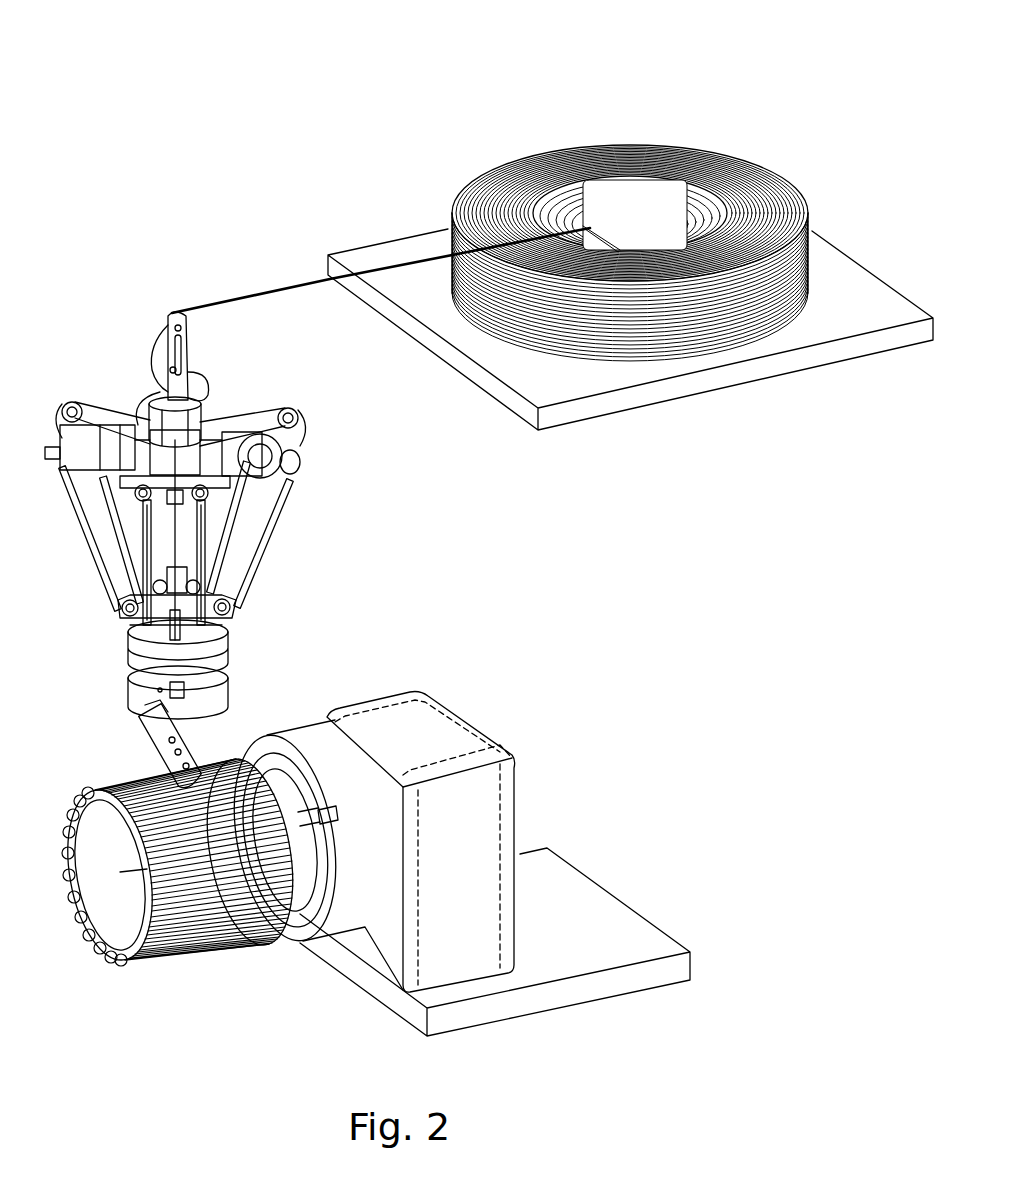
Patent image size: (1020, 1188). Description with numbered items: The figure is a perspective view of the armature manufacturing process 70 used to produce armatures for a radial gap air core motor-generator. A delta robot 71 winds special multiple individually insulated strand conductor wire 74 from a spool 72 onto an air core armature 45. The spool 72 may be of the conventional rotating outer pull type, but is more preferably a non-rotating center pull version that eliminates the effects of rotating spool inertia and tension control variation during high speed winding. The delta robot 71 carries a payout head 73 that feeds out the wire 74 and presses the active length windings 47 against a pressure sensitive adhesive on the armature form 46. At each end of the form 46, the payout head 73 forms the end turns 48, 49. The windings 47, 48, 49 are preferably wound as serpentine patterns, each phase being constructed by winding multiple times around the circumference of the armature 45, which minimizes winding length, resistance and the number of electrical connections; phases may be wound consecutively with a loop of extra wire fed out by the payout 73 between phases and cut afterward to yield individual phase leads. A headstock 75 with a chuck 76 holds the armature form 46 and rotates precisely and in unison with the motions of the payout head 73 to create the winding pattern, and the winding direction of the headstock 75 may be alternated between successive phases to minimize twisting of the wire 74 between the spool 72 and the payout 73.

The armature manufacturing process 70 is at (210, 74).
The delta robot 71 is at (91, 309).
The spool 72 is at (575, 122).
The payout head 73 is at (150, 756).
The conductor wire 74 is at (258, 292).
The headstock 75 is at (432, 715).
The chuck 76 is at (300, 722).
The air core armature 45 is at (150, 1000).
The armature form 46 is at (107, 900).
The active length windings 47 is at (257, 940).
The end turns 48 is at (75, 806).
The end turns 49 is at (291, 905).